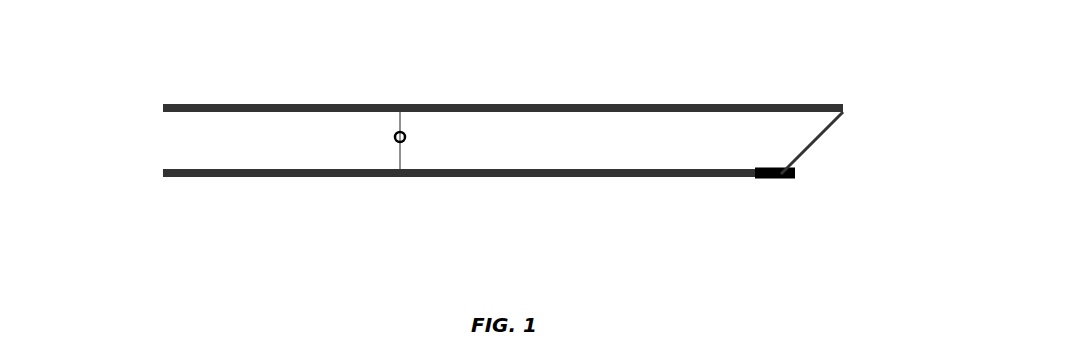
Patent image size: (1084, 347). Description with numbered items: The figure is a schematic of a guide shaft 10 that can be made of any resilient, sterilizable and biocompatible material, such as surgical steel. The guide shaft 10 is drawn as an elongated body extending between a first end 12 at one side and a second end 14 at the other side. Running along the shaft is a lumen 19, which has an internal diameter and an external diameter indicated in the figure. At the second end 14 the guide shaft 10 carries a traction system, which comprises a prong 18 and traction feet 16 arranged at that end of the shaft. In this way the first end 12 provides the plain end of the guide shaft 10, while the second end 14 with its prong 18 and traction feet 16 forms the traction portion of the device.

The guide shaft 10 is at (428, 81).
The first end 12 is at (153, 143).
The second end 14 is at (824, 149).
The traction feet 16 is at (846, 117).
The prong 18 is at (783, 178).
The lumen 19 is at (447, 140).